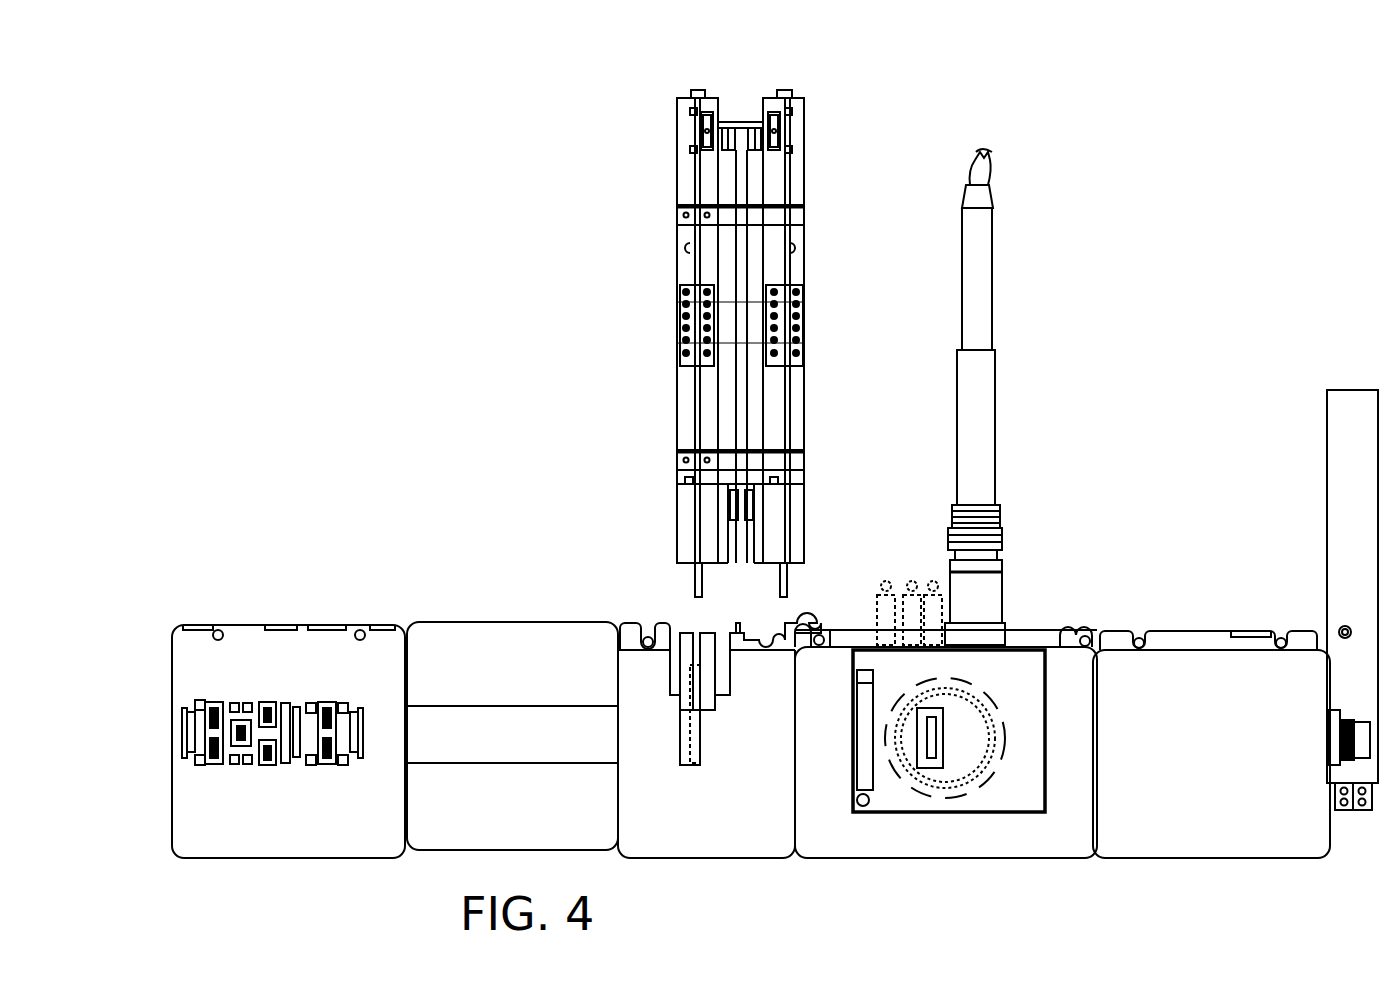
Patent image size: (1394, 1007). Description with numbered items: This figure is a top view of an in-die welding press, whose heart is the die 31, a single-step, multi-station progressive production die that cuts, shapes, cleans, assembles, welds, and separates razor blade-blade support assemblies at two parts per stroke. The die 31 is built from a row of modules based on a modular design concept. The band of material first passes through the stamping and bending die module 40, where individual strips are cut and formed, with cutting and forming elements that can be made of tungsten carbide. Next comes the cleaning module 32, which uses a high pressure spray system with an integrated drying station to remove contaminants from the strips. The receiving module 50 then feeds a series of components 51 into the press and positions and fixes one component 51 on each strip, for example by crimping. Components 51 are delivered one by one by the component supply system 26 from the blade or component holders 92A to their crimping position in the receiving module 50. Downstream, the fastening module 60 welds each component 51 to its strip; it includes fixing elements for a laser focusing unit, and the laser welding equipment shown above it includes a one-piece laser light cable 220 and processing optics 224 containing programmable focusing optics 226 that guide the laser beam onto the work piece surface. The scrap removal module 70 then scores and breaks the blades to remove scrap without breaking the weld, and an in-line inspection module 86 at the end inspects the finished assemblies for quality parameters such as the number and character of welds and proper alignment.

The component supply system 26 is at (696, 102).
The component holder 92A is at (790, 172).
The component 51 is at (787, 585).
The laser light cable 220 is at (1000, 152).
The processing optics 224 is at (1012, 405).
The die 31 is at (1193, 207).
The in-line inspection module 86 is at (1325, 432).
The die module 40 is at (270, 648).
The cleaning module 32 is at (494, 658).
The receiving module 50 is at (655, 714).
The fastening module 60 is at (915, 836).
The programmable focusing optics 226 is at (985, 785).
The scrap removal module 70 is at (1220, 688).